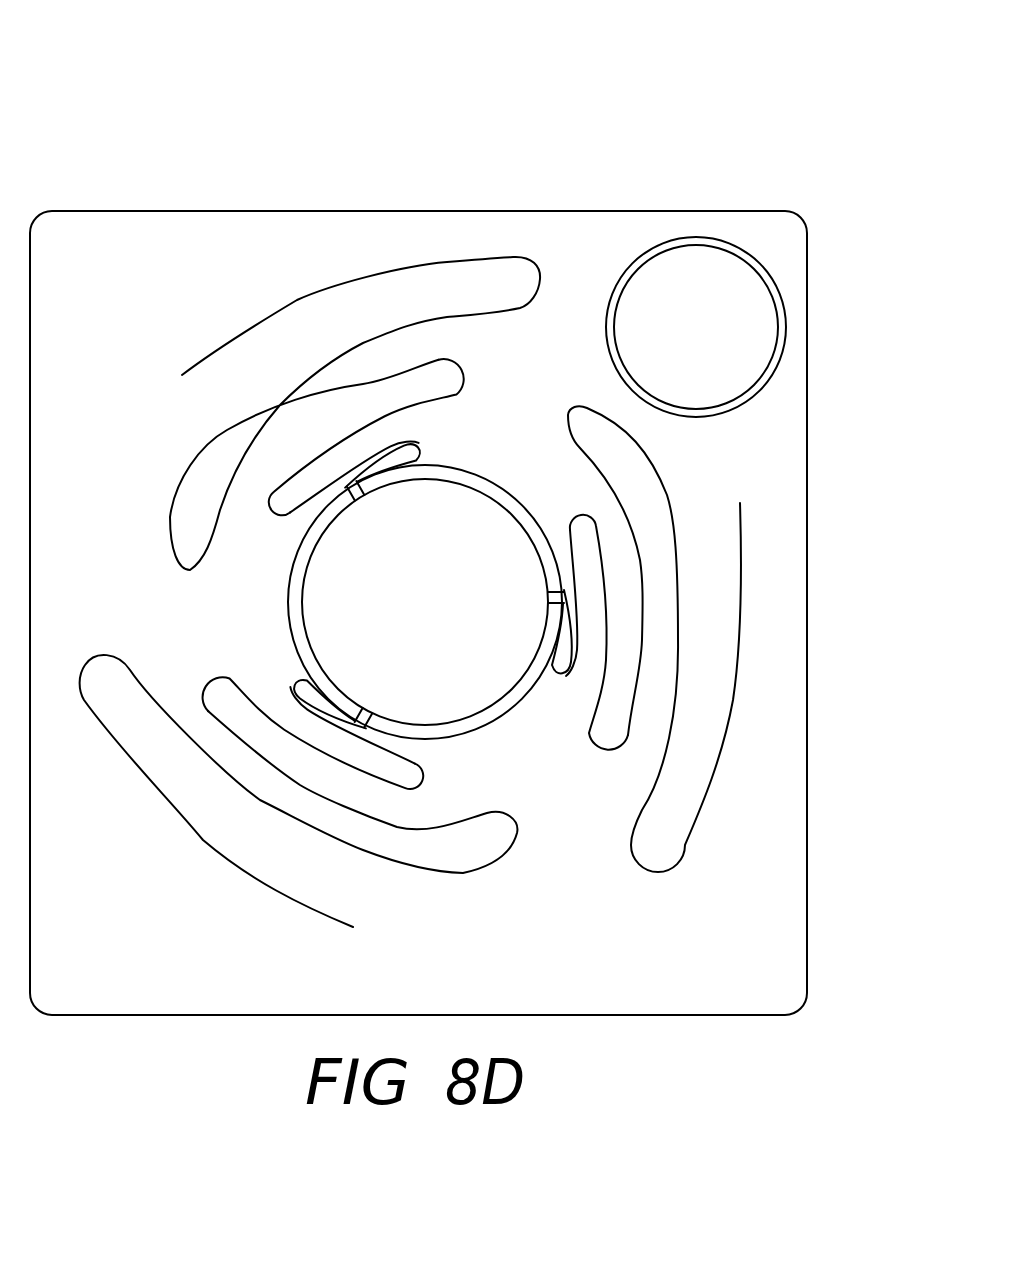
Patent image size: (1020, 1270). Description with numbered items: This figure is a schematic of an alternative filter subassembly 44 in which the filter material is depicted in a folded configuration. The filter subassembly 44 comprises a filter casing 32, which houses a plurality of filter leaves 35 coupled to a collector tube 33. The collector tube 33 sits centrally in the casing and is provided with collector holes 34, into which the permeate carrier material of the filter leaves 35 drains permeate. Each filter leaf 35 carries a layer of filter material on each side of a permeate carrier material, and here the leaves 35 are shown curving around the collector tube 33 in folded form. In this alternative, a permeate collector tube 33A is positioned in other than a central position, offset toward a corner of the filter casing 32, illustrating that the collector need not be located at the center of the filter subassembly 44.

The filter casing 32 is at (813, 617).
The collector tube 33 is at (293, 626).
The permeate collector tube 33A is at (627, 375).
The collector holes 34 is at (548, 597).
The filter leaves 35 is at (182, 375).
The filter subassembly 44 is at (275, 85).